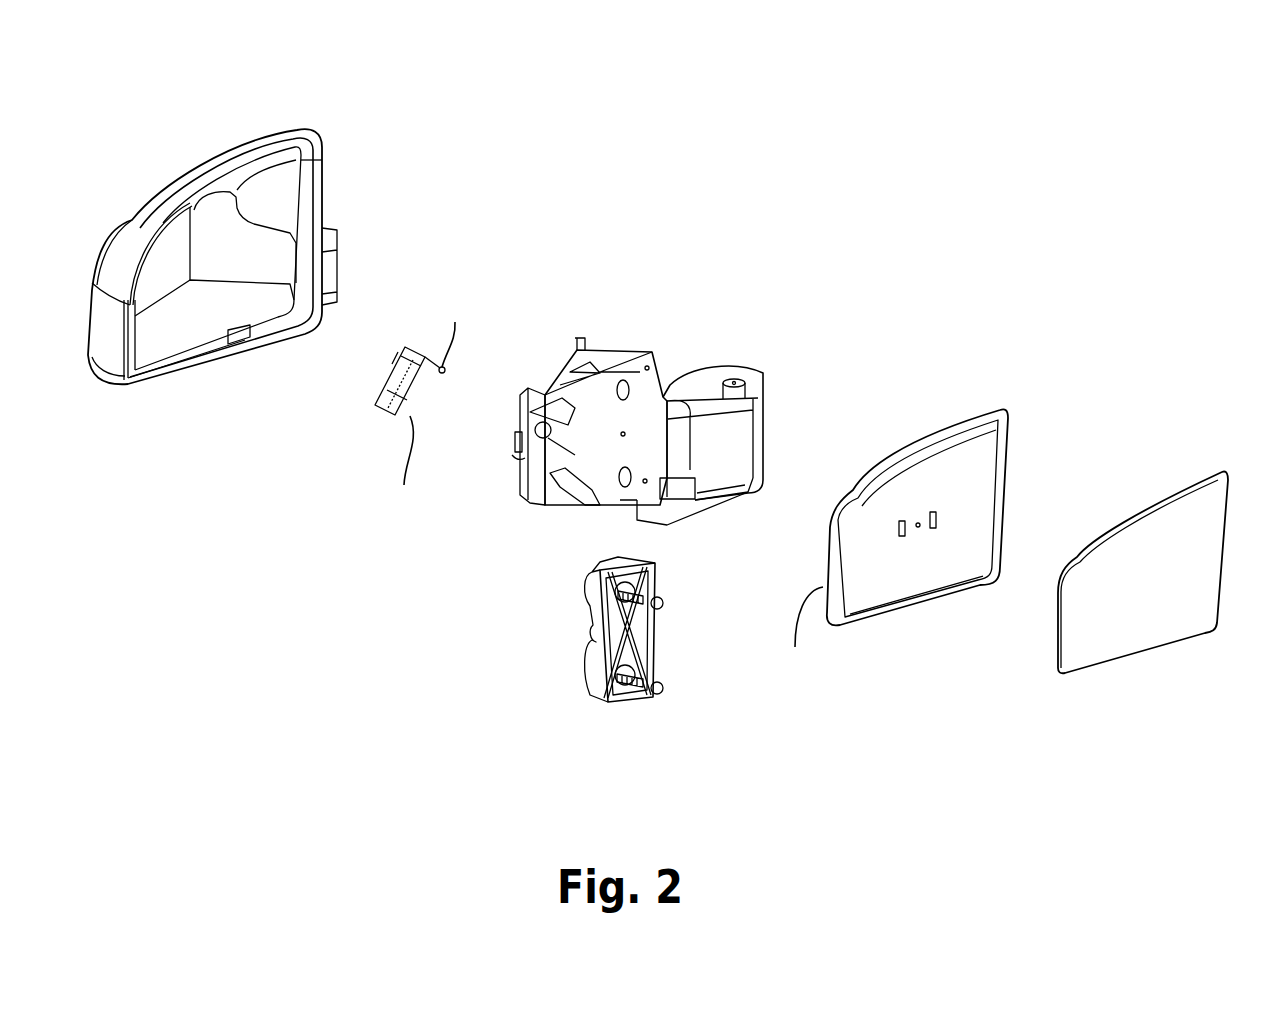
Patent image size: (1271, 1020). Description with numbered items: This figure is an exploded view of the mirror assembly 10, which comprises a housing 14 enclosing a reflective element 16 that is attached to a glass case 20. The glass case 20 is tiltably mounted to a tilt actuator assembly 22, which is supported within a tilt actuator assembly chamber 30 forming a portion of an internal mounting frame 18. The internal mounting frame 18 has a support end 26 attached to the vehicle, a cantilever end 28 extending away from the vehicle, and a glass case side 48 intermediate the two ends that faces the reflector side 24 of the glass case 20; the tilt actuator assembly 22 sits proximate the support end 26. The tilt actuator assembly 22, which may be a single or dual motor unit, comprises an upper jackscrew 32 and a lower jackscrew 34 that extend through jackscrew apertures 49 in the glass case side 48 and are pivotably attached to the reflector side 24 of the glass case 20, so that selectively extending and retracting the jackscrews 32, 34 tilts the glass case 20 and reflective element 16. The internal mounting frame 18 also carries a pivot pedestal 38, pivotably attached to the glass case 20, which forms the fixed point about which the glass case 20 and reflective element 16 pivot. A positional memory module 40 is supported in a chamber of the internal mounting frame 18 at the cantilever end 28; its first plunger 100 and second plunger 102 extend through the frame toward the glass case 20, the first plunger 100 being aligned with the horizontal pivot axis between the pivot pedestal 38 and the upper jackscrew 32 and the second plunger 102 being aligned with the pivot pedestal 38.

The mirror assembly 10 is at (665, 92).
The housing 14 is at (277, 135).
The reflective element 16 is at (1178, 510).
The internal mounting frame 18 is at (668, 310).
The glass case 20 is at (990, 443).
The tilt actuator assembly 22 is at (595, 648).
The reflector side 24 is at (800, 634).
The support end 26 is at (741, 358).
The cantilever end 28 is at (518, 471).
The tilt actuator assembly chamber 30 is at (621, 344).
The upper jackscrew 32 is at (664, 606).
The lower jackscrew 34 is at (662, 692).
The pivot pedestal 38 is at (537, 413).
The positional memory module 40 is at (383, 418).
The glass case side 48 is at (612, 435).
The jackscrew apertures 49 is at (620, 384).
The first plunger 100 is at (449, 332).
The second plunger 102 is at (403, 467).